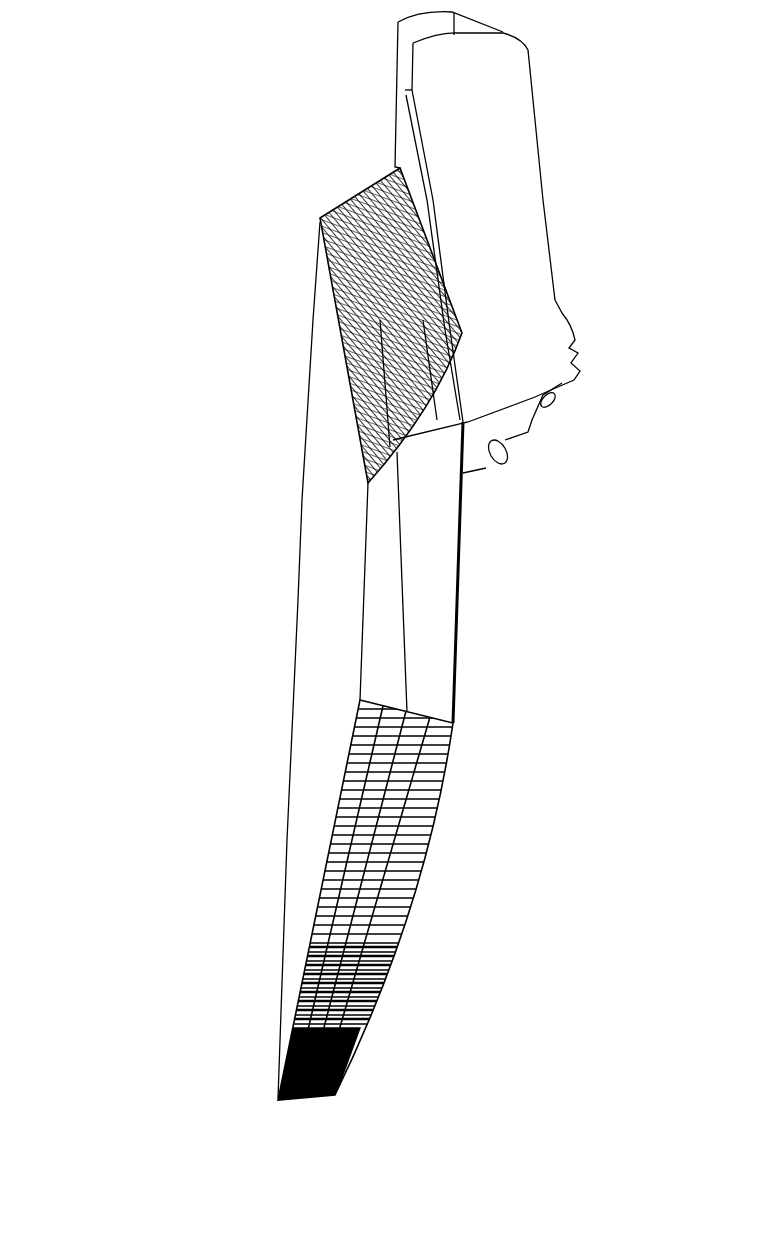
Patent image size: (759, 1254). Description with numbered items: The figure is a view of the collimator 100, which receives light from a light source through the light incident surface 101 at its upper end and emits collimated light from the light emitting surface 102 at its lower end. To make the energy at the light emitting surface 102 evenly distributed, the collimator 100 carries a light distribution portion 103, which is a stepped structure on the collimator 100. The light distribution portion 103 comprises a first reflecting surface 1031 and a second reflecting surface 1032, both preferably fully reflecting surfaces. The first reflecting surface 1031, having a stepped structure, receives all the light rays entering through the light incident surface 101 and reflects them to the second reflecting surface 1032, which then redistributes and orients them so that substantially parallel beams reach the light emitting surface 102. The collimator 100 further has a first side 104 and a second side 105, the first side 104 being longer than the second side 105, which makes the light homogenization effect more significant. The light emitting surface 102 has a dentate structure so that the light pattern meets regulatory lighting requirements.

The collimator 100 is at (170, 128).
The light incident surface 101 is at (503, 32).
The light emitting surface 102 is at (420, 857).
The light distribution portion 103 is at (365, 185).
The first reflecting surface 1031 is at (531, 430).
The second reflecting surface 1032 is at (347, 368).
The first side 104 is at (298, 598).
The second side 105 is at (445, 597).